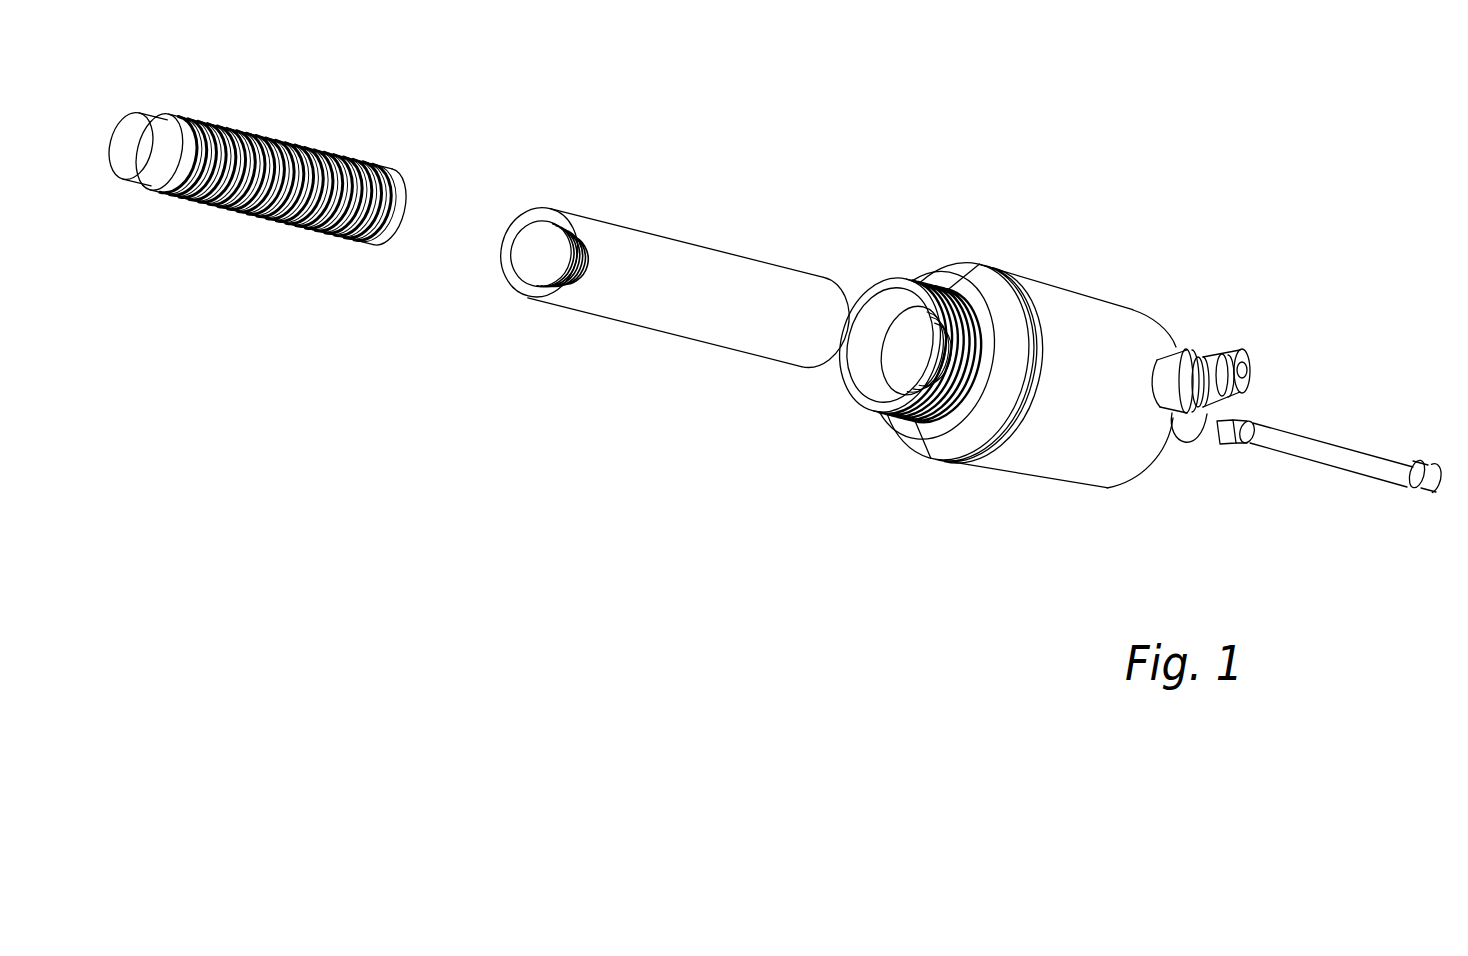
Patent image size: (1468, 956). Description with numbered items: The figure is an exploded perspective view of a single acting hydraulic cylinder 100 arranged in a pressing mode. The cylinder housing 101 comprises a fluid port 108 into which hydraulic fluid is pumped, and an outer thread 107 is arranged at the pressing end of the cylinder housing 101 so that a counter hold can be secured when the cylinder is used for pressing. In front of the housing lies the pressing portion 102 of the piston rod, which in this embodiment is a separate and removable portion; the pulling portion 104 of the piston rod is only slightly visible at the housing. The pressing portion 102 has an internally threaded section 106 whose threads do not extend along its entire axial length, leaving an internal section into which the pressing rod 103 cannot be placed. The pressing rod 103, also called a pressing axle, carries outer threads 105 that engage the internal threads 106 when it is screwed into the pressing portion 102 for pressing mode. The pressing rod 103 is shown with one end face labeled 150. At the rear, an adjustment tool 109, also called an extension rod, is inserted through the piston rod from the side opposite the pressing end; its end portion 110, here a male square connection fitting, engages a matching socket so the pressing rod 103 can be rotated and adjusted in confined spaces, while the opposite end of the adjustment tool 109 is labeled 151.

The hydraulic cylinder 100 is at (1110, 225).
The cylinder housing 101 is at (1040, 453).
The pressing portion 102 is at (662, 297).
The pressing rod 103 is at (290, 242).
The pulling portion 104 is at (1187, 433).
The outer threads 105 is at (180, 184).
The internally threaded section 106 is at (542, 257).
The outer thread 107 is at (952, 300).
The fluid port 108 is at (1225, 348).
The adjustment tool 109 is at (1340, 457).
The end portion 110 is at (1243, 438).
The rod end face 150 is at (128, 148).
The pin end cap 151 is at (1432, 487).